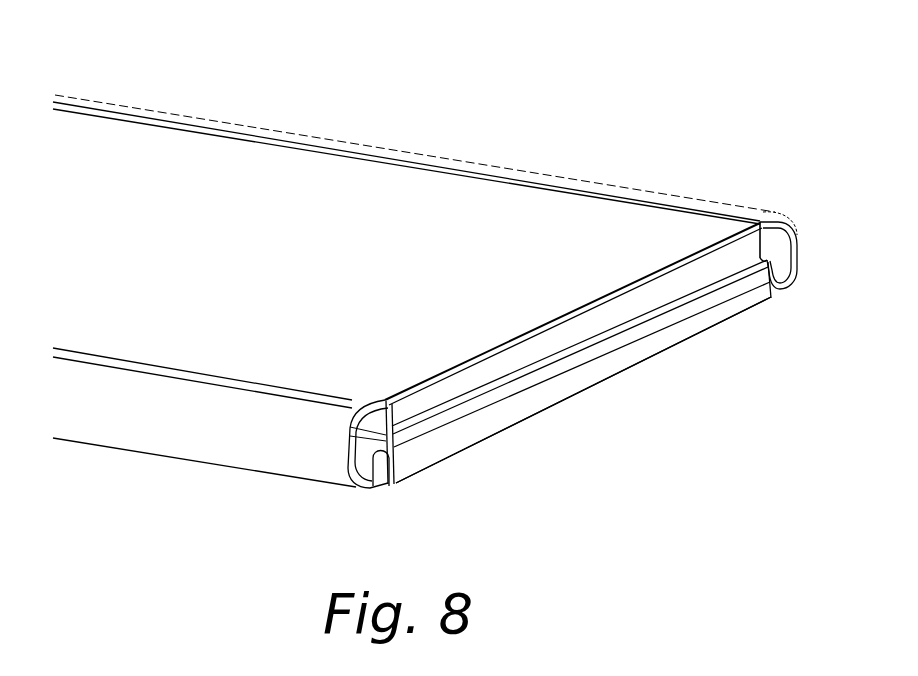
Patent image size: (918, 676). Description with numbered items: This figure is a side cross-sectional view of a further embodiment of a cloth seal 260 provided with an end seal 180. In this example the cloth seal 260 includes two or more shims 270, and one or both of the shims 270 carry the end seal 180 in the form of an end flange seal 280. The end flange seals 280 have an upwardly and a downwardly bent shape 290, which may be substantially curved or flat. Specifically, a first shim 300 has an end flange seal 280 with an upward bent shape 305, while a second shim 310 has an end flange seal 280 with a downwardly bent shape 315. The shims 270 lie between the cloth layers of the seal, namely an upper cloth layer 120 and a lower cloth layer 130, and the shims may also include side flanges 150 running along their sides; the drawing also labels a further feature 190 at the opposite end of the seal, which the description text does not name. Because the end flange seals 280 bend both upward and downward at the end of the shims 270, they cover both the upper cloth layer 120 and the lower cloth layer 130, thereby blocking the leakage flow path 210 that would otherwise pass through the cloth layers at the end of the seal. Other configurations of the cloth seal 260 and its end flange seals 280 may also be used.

The upper cloth layer 120 is at (247, 157).
The lower cloth layer 130 is at (380, 470).
The side flanges 150 is at (130, 462).
The end seal 180 is at (548, 421).
The second hinge end 190 is at (742, 211).
The leakage flow path 210 is at (667, 416).
The cloth seal 260 is at (417, 96).
The shims 270 is at (780, 302).
The end flange seal 280 is at (717, 322).
The bent shape 290 is at (682, 347).
The first shim 300 is at (439, 360).
The upward bent shape 305 is at (508, 340).
The second shim 310 is at (434, 474).
The downwardly bent shape 315 is at (470, 430).